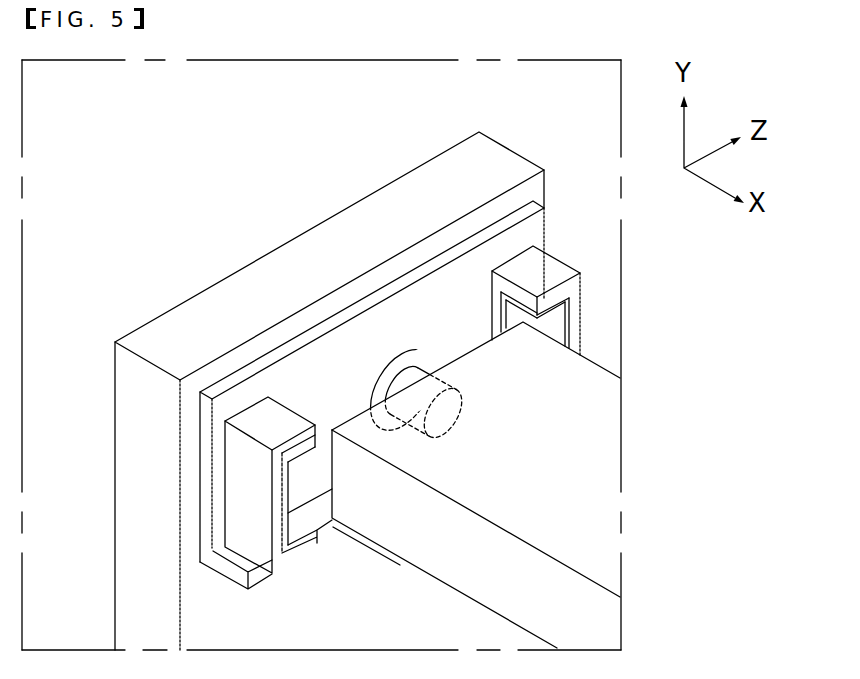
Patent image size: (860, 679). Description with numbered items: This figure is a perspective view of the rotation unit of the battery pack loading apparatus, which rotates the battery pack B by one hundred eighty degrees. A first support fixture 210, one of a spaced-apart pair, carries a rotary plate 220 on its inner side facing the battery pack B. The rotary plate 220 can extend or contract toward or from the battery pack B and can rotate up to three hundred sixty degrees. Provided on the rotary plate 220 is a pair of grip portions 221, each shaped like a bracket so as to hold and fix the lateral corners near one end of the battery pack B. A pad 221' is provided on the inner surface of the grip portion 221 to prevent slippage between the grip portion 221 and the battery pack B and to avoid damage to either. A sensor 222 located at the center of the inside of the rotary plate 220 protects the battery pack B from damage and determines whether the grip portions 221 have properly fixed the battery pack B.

The first support fixture 210 is at (163, 332).
The rotary plate 220 is at (292, 340).
The grip portion 221 is at (187, 485).
The pad 221' is at (435, 433).
The sensor 222 is at (412, 375).
The battery pack B is at (609, 393).